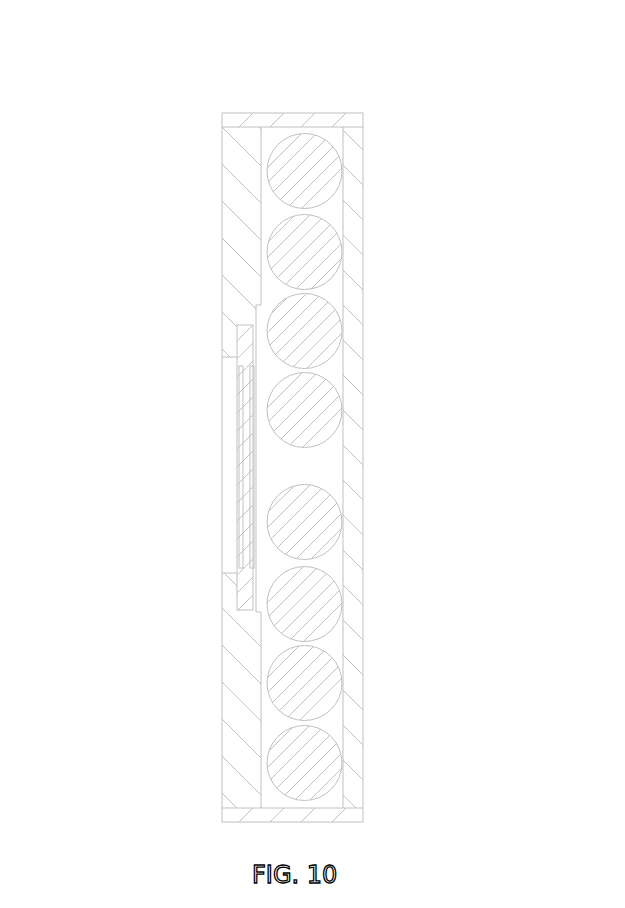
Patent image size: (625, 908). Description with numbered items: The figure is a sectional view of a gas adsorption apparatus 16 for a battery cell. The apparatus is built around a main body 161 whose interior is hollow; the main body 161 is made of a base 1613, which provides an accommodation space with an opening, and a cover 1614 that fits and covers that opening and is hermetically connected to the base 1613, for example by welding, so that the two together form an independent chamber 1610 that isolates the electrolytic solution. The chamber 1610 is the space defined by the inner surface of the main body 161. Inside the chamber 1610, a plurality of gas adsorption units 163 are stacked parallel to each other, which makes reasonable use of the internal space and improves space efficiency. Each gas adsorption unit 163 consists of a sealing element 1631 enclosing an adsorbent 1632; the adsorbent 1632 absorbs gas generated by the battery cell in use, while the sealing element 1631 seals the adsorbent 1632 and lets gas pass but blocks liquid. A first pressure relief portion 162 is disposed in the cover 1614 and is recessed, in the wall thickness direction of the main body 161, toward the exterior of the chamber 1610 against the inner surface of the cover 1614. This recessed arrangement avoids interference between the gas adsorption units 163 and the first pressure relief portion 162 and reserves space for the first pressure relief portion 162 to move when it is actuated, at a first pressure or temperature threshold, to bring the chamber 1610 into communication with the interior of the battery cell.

The gas adsorption apparatus 16 is at (347, 45).
The main body 161 is at (222, 449).
The base 1613 is at (273, 118).
The cover 1614 is at (117, 75).
The chamber 1610 is at (350, 450).
The first pressure relief portion 162 is at (217, 470).
The gas adsorption unit 163 is at (396, 467).
The sealing element 1631 is at (340, 580).
The adsorbent 1632 is at (355, 606).